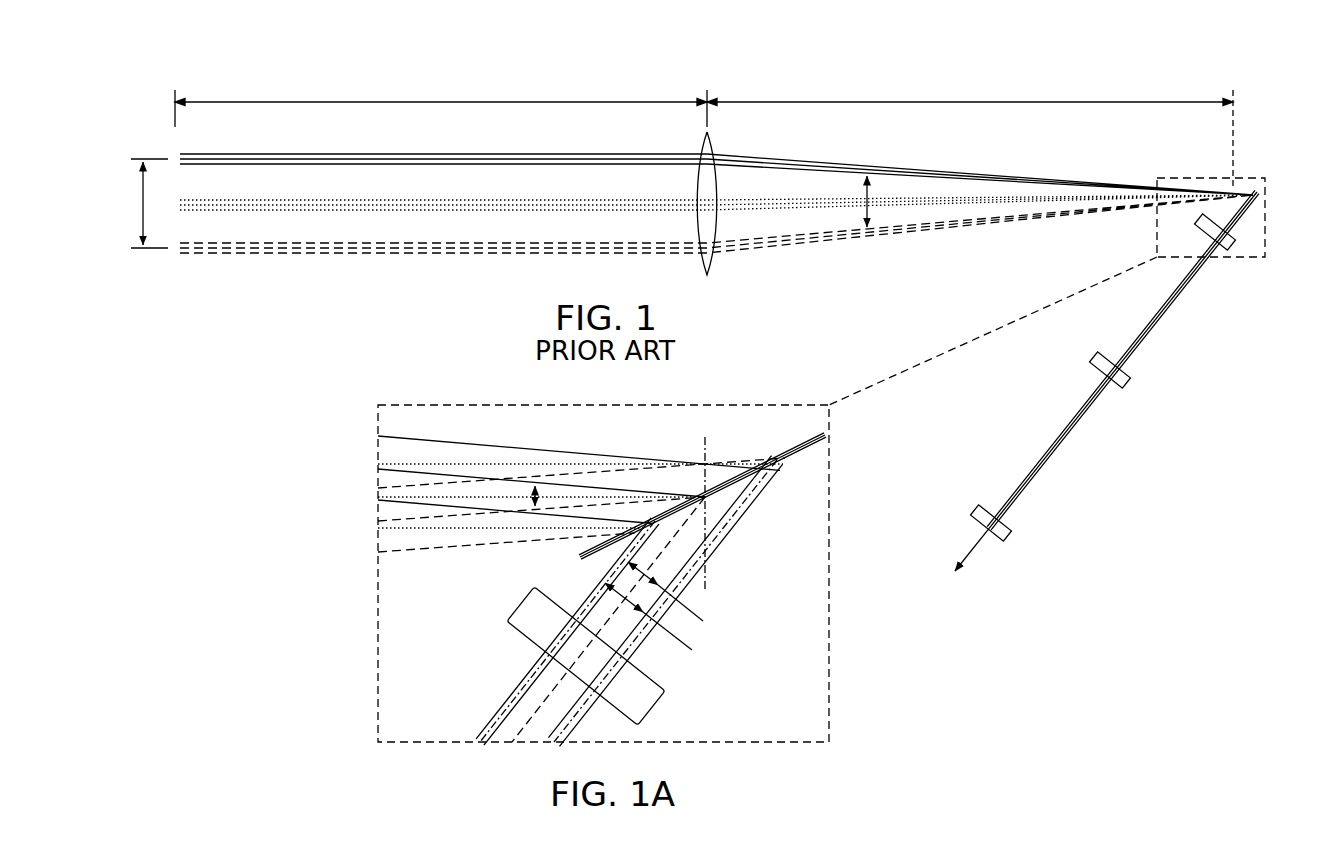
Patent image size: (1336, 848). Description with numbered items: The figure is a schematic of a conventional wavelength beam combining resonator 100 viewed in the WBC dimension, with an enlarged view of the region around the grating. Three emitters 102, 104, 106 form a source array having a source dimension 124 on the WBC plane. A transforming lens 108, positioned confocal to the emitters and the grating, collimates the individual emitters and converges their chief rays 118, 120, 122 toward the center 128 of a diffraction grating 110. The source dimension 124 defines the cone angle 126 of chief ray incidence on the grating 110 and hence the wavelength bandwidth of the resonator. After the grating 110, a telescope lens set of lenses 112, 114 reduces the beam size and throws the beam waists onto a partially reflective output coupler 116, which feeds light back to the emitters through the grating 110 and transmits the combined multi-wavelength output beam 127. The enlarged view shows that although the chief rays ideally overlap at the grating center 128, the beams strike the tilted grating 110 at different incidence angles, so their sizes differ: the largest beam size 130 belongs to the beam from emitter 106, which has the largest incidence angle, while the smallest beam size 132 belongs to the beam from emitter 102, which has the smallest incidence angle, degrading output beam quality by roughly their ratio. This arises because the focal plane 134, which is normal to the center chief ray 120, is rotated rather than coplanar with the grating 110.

In FIG. 1, the wavelength beam combining (WBC) resonator 100 is at (335, 47).
In FIG. 1, the emitter 102 is at (182, 156).
In FIG. 1, the emitter 104 is at (182, 201).
In FIG. 1, the emitter 106 is at (182, 246).
In FIG. 1, the transforming lens 108 is at (718, 143).
In FIG. 1, the diffraction grating 110 is at (1253, 200).
In FIG. 1A, the diffraction grating 110 is at (790, 451).
In FIG. 1, the telescope lens 112 is at (1238, 258).
In FIG. 1A, the telescope lens 112 is at (513, 603).
In FIG. 1, the telescope lens 114 is at (1134, 380).
In FIG. 1, the partially reflective output coupler 116 is at (1014, 531).
In FIG. 1A, the chief ray 118 is at (606, 479).
In FIG. 1A, the center chief ray 120 is at (497, 488).
In FIG. 1A, the chief ray 122 is at (568, 496).
In FIG. 1, the source dimension D 124 is at (124, 218).
In FIG. 1, the cone angle θ 126 is at (850, 219).
In FIG. 1, the combined multi-wavelength output beam 127 is at (973, 545).
In FIG. 1A, the center of the grating 128 is at (714, 499).
In FIG. 1A, the beam size SN 130 is at (723, 665).
In FIG. 1A, the beam size S1 132 is at (733, 633).
In FIG. 1A, the focal plane 134 is at (712, 582).